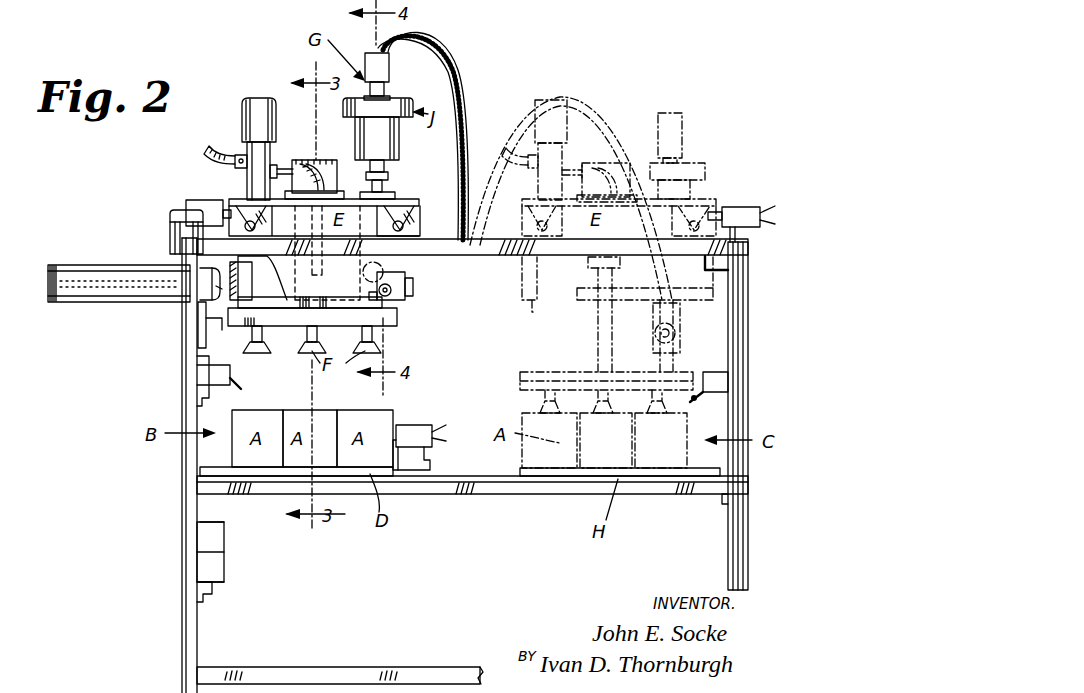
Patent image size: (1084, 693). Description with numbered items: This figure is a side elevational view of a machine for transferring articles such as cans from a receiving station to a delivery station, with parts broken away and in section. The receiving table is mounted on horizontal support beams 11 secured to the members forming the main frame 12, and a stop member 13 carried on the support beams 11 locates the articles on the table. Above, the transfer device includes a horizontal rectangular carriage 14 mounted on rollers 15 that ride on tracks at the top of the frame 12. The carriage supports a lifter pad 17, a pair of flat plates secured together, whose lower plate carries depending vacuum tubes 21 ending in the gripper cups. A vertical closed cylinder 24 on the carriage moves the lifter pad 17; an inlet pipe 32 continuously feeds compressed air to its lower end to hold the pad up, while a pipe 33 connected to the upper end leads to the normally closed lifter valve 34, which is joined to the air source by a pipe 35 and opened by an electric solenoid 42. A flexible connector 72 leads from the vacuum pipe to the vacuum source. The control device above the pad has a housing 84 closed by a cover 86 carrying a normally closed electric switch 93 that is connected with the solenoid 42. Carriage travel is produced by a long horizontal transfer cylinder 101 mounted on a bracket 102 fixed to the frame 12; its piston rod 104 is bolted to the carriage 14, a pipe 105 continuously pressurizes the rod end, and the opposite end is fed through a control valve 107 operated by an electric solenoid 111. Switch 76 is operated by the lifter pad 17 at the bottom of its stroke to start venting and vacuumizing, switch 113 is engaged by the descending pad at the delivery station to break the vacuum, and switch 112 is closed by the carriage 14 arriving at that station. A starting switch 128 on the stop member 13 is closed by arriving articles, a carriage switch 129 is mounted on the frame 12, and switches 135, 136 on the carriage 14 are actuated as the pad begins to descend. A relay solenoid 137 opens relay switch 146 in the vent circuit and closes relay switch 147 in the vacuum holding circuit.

The support beams 11 is at (482, 478).
The frame 12 is at (186, 503).
The stop member 13 is at (416, 456).
The carriage 14 is at (400, 200).
The rollers 15 is at (264, 225).
The lifter pad 17 is at (399, 322).
The vacuum tubes 21 is at (363, 334).
The cylinder 24 is at (322, 167).
The inlet pipe 32 is at (311, 162).
The pipe 33 is at (283, 166).
The lifter valve 34 is at (256, 110).
The pipe 35 is at (219, 146).
The electric solenoid 42 is at (244, 178).
The flexible connector 72 is at (453, 67).
The electric switch 76 is at (208, 380).
The housing 84 is at (388, 142).
The cover 86 is at (398, 104).
The electric switch 93 is at (390, 68).
The transfer cylinder 101 is at (110, 297).
The bracket 102 is at (200, 328).
The piston rod 104 is at (212, 297).
The pipe 105 is at (398, 280).
The control valve 107 is at (181, 217).
The electric solenoid 111 is at (166, 234).
The electric switch 112 is at (737, 212).
The electric switch 113 is at (718, 374).
The starting switch 128 is at (413, 426).
The carriage switch 129 is at (203, 200).
The switch 135 is at (232, 302).
The switch 136 is at (224, 341).
The relay solenoid 137 is at (229, 553).
The relay switch 146 is at (212, 571).
The relay switch 147 is at (212, 541).